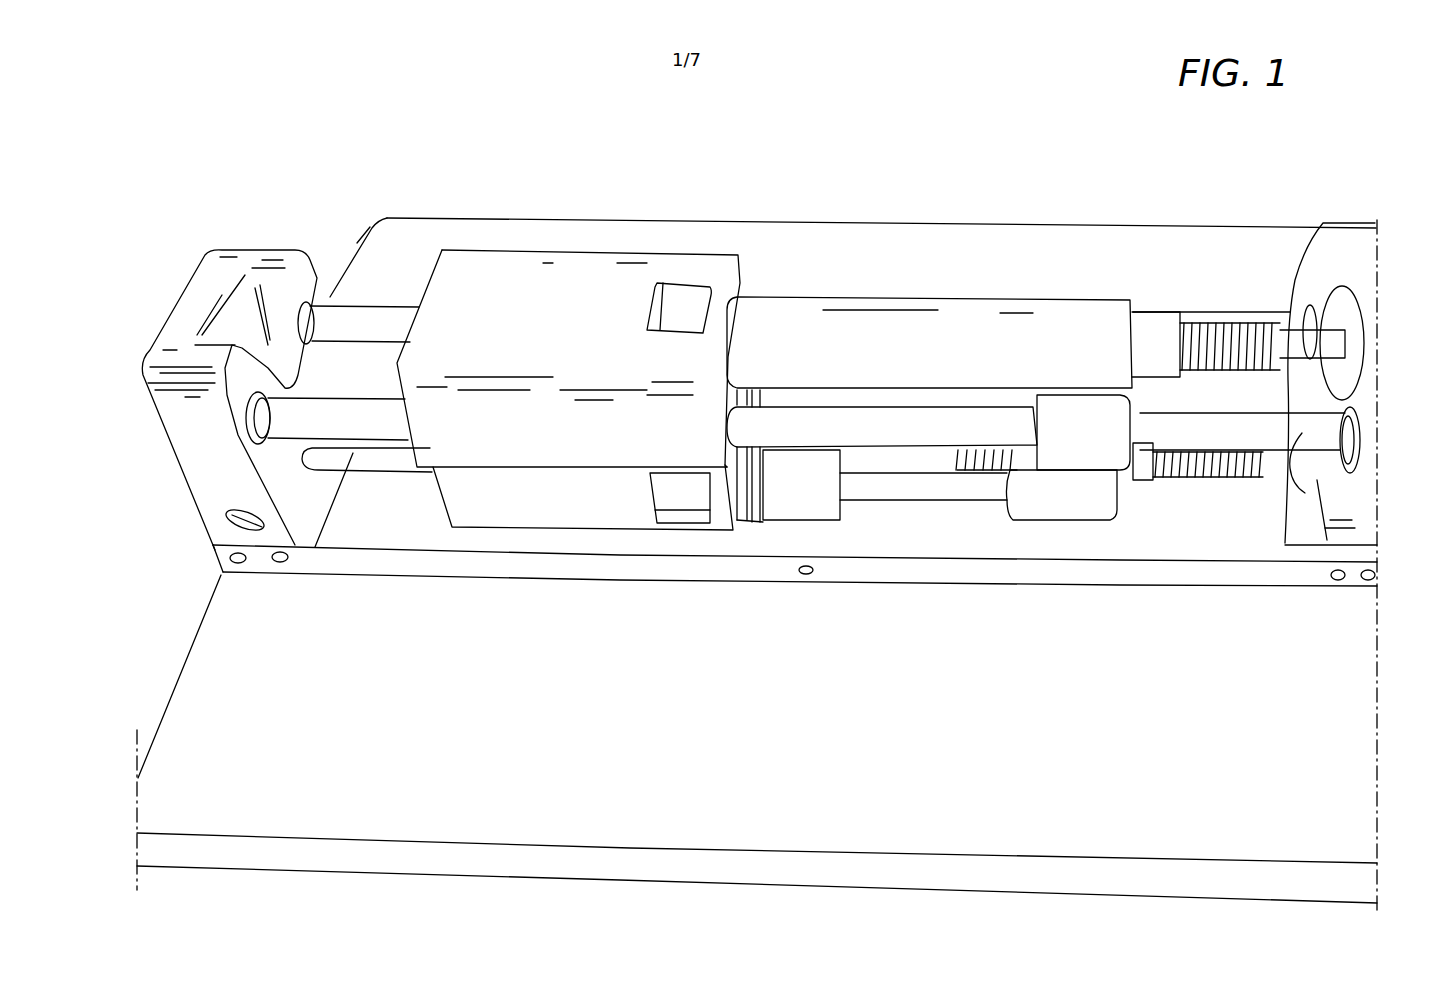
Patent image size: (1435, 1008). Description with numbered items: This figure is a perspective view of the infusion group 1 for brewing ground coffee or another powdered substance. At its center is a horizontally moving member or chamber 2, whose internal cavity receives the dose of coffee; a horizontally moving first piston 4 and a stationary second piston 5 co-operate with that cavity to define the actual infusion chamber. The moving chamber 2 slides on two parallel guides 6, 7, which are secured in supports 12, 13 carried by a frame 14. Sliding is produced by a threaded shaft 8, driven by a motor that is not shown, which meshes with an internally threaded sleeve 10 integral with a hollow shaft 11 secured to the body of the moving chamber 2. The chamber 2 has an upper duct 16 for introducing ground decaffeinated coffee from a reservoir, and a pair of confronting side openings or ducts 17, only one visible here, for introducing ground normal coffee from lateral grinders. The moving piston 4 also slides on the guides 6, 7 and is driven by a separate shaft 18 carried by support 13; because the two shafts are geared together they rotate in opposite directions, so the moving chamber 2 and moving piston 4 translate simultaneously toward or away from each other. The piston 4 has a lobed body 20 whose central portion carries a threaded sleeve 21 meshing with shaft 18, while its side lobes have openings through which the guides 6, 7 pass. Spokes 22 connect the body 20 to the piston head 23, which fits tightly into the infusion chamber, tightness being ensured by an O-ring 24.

The infusion group 1 is at (656, 212).
The moving chamber 2 is at (533, 290).
The first piston 4 is at (1003, 520).
The second stationary piston 5 is at (383, 457).
The guide 6 is at (330, 313).
The guide 7 is at (285, 418).
The threaded shaft 8 is at (1290, 360).
The internally threaded sleeve 10 is at (1160, 330).
The hollow shaft 11 is at (913, 343).
The support 12 is at (202, 300).
The support 13 is at (1353, 243).
The frame 14 is at (1353, 680).
The upper duct 16 is at (683, 317).
The side opening 17 is at (685, 493).
The shaft 18 is at (1227, 480).
The body 20 is at (1068, 514).
The threaded sleeve 21 is at (1142, 480).
The spokes 22 is at (952, 497).
The piston head 23 is at (793, 500).
The O-ring 24 is at (757, 458).